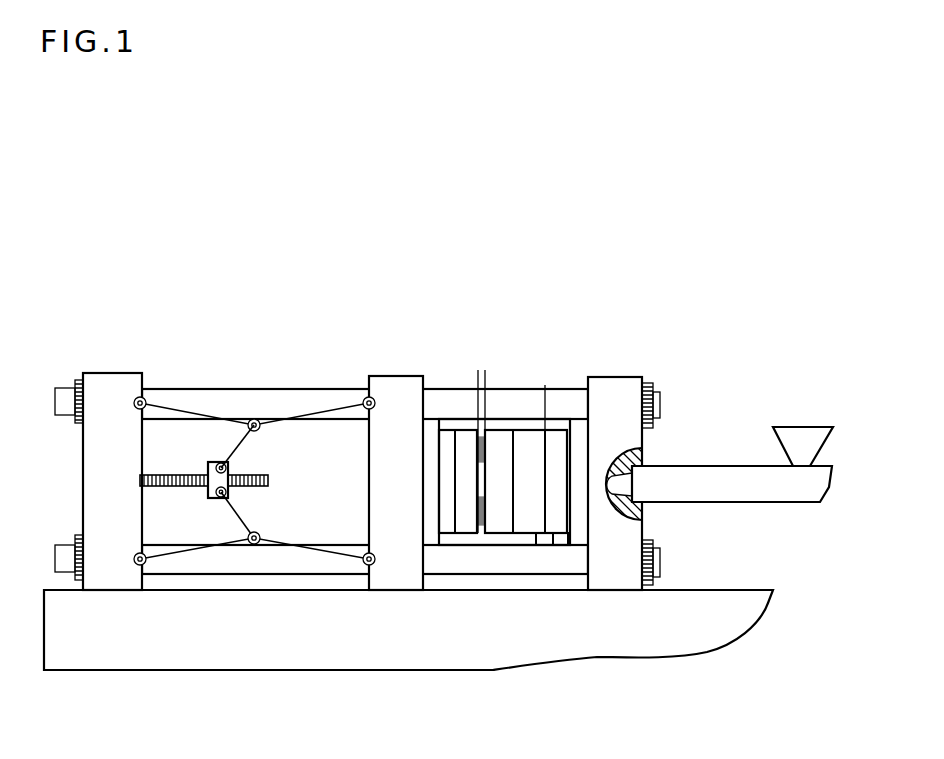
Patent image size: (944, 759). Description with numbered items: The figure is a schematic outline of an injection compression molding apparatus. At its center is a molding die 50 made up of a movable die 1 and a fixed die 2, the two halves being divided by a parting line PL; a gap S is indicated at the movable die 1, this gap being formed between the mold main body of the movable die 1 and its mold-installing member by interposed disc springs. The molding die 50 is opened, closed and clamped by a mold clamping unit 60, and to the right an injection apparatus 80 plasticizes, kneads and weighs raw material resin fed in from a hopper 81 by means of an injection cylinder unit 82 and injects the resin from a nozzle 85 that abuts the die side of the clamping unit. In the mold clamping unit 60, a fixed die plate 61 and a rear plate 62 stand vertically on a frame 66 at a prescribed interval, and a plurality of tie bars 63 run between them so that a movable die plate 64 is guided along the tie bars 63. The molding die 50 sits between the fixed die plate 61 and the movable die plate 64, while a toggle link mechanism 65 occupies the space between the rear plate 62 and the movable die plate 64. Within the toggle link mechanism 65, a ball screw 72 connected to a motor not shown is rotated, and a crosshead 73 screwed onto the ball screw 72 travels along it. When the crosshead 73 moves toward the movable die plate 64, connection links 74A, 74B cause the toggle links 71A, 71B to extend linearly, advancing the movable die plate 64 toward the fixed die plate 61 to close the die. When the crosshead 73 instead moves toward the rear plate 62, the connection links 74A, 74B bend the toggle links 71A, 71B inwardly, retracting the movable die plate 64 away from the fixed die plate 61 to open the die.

The movable die 1 is at (528, 442).
The fixed die 2 is at (558, 443).
The molding die 50 is at (512, 413).
The gap S is at (503, 377).
The parting line PL is at (544, 395).
The mold clamping unit 60 is at (357, 460).
The fixed die plate 61 is at (613, 380).
The rear plate 62 is at (112, 380).
The tie bar 63 is at (312, 392).
The movable die plate 64 is at (397, 380).
The toggle link mechanism 65 is at (254, 481).
The frame 66 is at (183, 642).
The toggle link 71A is at (263, 426).
The toggle link 71B is at (254, 543).
The ball screw 72 is at (258, 474).
The crosshead 73 is at (229, 495).
The connection link 74A is at (240, 445).
The connection link 74B is at (245, 517).
The injection apparatus 80 is at (745, 433).
The hopper 81 is at (805, 437).
The injection cylinder unit 82 is at (712, 476).
The nozzle 85 is at (618, 484).